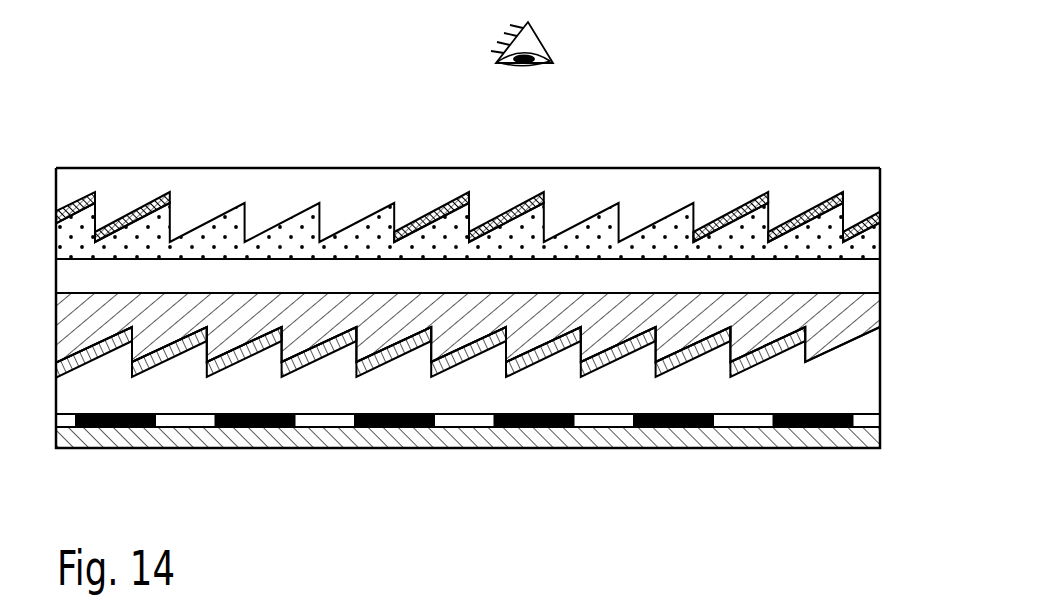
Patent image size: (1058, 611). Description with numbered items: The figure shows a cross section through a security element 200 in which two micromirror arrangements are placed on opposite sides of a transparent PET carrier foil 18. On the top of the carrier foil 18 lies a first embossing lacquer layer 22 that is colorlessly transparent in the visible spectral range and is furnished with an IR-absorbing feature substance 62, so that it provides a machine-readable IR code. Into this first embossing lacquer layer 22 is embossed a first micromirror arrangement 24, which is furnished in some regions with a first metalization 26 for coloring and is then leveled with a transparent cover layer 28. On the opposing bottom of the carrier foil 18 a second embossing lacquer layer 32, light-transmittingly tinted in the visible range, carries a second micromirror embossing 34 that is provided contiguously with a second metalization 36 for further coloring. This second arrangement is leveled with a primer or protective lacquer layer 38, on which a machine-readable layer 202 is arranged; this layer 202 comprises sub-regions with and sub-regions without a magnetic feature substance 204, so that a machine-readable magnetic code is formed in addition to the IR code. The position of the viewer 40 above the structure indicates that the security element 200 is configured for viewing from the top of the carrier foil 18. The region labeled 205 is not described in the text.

The security element 200 is at (120, 95).
The viewer 40 is at (536, 36).
The transparent cover layer 28 is at (868, 187).
The first embossing lacquer layer 22 is at (75, 223).
The first micromirror arrangement 24 is at (198, 223).
The first metalization 26 is at (128, 215).
The IR-absorbing feature substance 62 is at (353, 225).
The transparent PET carrier foil 18 is at (868, 277).
The second embossing lacquer layer 32 is at (868, 315).
The second micromirror embossing 34 is at (252, 355).
The second metalization 36 is at (175, 358).
The primer or protective lacquer layer 38 is at (868, 372).
The machine-readable layer 202 is at (868, 420).
The magnetic feature substance 204 is at (813, 428).
The substrate region 205 is at (687, 433).